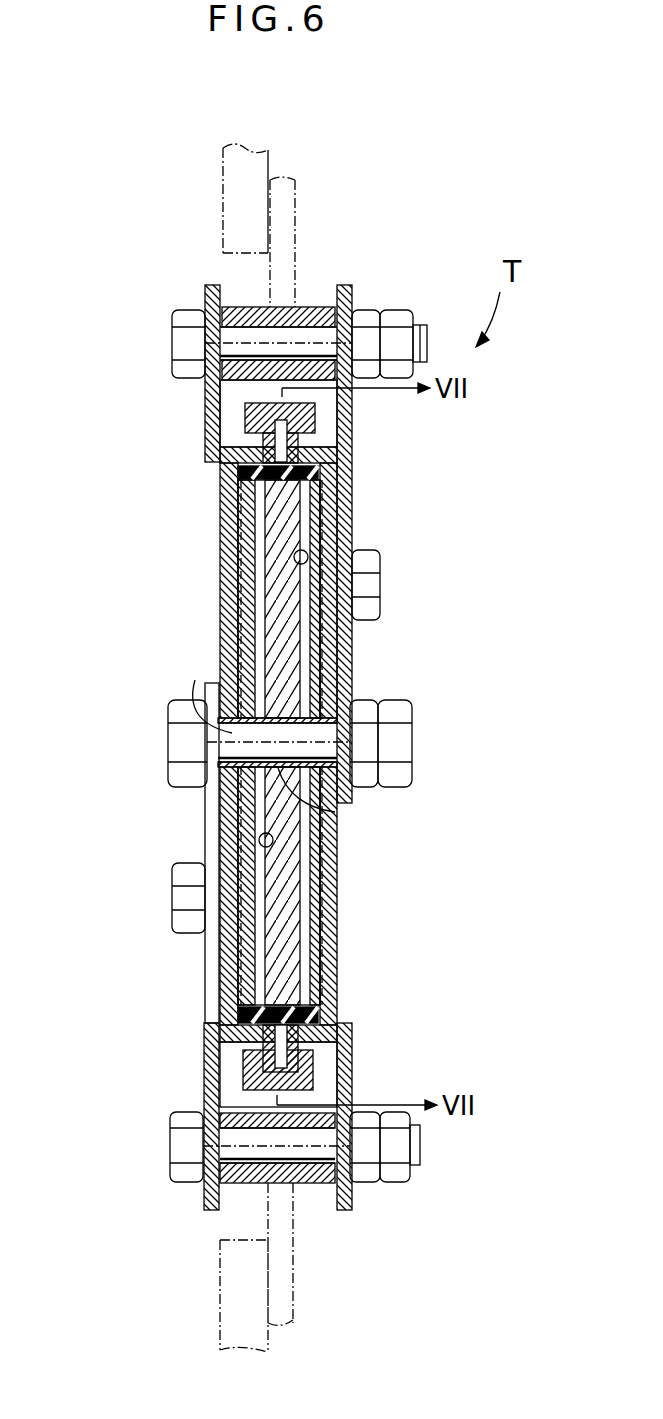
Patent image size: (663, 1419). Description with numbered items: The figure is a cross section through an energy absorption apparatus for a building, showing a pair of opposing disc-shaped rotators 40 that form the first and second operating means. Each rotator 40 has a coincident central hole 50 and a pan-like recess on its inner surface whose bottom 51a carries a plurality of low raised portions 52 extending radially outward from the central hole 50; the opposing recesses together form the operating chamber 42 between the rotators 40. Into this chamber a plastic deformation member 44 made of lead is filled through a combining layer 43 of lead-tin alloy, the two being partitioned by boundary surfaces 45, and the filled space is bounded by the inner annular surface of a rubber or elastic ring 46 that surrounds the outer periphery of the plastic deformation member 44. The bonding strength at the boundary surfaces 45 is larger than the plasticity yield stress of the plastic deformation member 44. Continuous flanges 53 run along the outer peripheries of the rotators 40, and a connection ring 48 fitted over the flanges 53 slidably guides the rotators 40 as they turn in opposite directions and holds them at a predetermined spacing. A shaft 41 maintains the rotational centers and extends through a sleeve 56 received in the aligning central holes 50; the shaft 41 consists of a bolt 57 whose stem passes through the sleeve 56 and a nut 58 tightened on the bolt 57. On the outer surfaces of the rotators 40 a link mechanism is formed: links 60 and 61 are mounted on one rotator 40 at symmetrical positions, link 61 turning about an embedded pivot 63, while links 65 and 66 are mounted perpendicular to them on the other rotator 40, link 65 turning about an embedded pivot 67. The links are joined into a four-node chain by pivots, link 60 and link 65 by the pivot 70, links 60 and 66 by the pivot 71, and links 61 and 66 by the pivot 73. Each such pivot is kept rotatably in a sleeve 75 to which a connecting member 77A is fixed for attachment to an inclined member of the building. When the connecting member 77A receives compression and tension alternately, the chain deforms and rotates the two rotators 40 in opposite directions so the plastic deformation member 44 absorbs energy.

The rotator 40 is at (220, 514).
The shaft 41 is at (178, 742).
The operating chamber 42 is at (84, 513).
The combining layer 43 is at (248, 548).
The plastic deformation member 44 is at (270, 578).
The boundary surface 45 is at (205, 403).
The rubber or elastic ring 46 is at (318, 475).
The connection ring 48 is at (316, 418).
The central hole 50 is at (205, 703).
The bottom of the recess 51a is at (315, 653).
The raised portion 52 is at (307, 545).
The flange 53 is at (293, 438).
The sleeve 56 is at (290, 727).
The bolt 57 is at (303, 798).
The nut 58 is at (365, 703).
The link 60 is at (206, 288).
The link 61 is at (204, 1086).
The pivot 63 is at (172, 893).
The link 65 is at (349, 296).
The link 66 is at (345, 1062).
The pivot 67 is at (372, 592).
The pivot 70 is at (172, 330).
The pivot 71 is at (185, 695).
The pivot 73 is at (170, 1150).
The sleeve 75 is at (313, 307).
The connecting member 77A is at (297, 212).